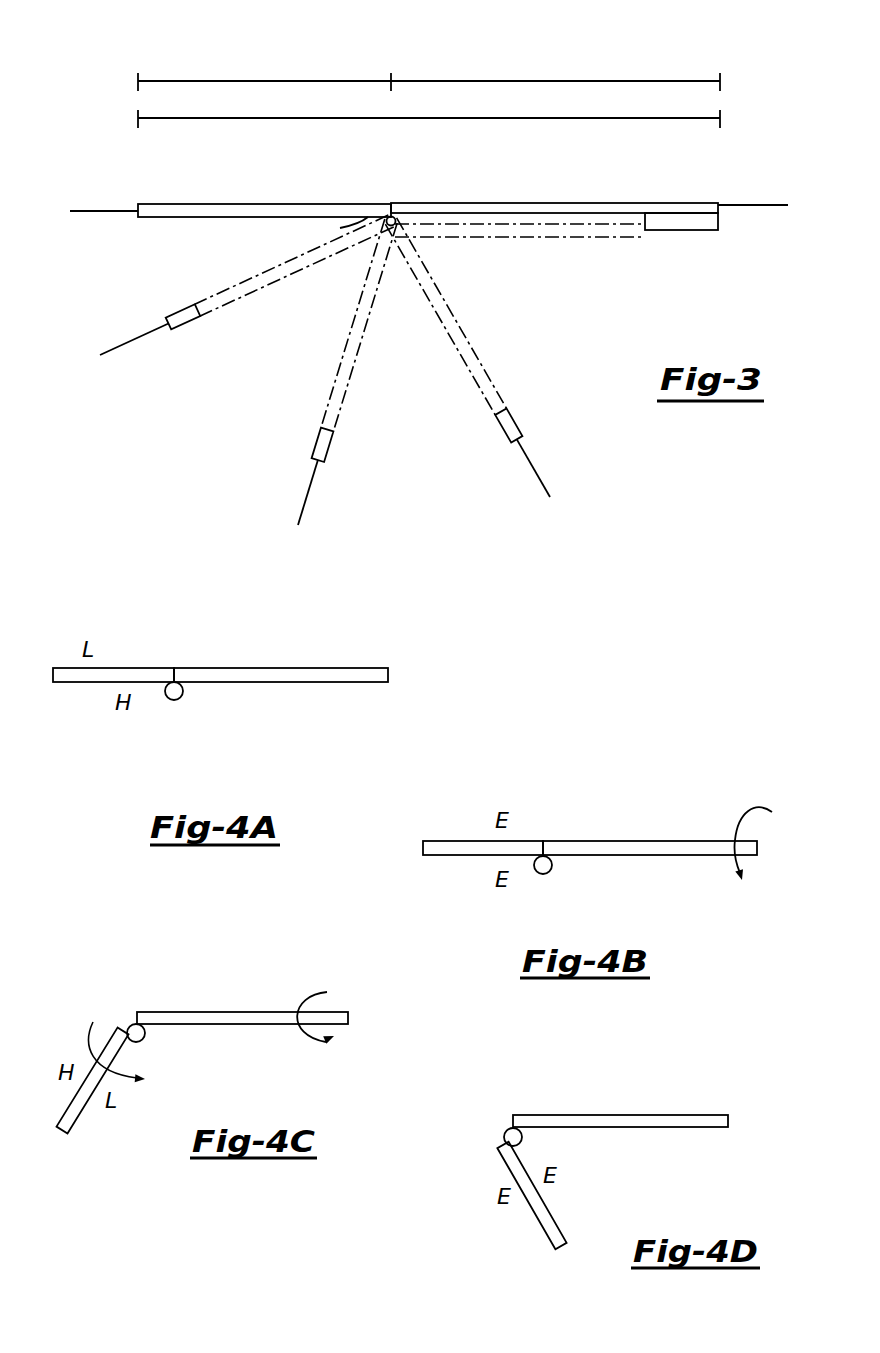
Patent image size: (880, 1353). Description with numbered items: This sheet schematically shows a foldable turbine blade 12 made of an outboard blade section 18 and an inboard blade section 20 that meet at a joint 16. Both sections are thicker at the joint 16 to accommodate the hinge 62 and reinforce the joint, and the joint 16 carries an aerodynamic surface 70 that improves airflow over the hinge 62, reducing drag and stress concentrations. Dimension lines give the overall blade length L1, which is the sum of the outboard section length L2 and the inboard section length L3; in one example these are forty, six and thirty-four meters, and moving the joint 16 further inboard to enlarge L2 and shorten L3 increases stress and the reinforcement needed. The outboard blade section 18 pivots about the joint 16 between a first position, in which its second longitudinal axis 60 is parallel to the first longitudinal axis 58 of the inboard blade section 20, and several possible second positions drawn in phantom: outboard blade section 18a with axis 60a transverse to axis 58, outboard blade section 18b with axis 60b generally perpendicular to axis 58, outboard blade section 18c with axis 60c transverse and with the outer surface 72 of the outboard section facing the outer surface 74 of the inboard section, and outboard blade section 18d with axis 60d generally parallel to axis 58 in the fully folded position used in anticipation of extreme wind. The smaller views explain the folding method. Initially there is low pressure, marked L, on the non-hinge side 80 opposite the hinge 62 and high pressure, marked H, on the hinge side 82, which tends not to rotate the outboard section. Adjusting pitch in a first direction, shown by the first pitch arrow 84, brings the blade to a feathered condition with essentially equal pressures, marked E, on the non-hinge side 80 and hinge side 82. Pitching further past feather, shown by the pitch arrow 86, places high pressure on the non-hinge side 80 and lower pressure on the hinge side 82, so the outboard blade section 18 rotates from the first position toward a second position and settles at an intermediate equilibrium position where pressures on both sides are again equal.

In FIG. 3, the turbine blade 12 is at (332, 140).
In FIG. 4A, the turbine blade 12 is at (132, 643).
In FIG. 3, the joint 16 is at (390, 196).
In FIG. 3, the outboard blade section 18 is at (284, 203).
In FIG. 4A, the outboard blade section 18 is at (65, 682).
In FIG. 4B, the outboard blade section 18 is at (437, 856).
In FIG. 4C, the outboard blade section 18 is at (77, 1118).
In FIG. 4D, the outboard blade section 18 is at (528, 1214).
In FIG. 3, the inboard blade section 20 is at (656, 203).
In FIG. 4A, the inboard blade section 20 is at (372, 682).
In FIG. 4B, the inboard blade section 20 is at (680, 851).
In FIG. 4C, the inboard blade section 20 is at (270, 1025).
In FIG. 4D, the inboard blade section 20 is at (700, 1127).
In FIG. 3, the first longitudinal axis 58 is at (775, 205).
In FIG. 3, the second longitudinal axis 60 is at (80, 211).
In FIG. 3, the second longitudinal axis 60a is at (113, 353).
In FIG. 3, the second longitudinal axis 60b is at (300, 517).
In FIG. 3, the second longitudinal axis 60c is at (543, 483).
In FIG. 3, the second longitudinal axis 60d is at (700, 232).
In FIG. 3, the outboard blade section 18a is at (190, 318).
In FIG. 3, the outboard blade section 18b is at (340, 393).
In FIG. 3, the outboard blade section 18c is at (485, 375).
In FIG. 3, the outboard blade section 18d is at (580, 240).
In FIG. 3, the aerodynamic surface 70 is at (360, 224).
In FIG. 3, the outer surface 72 is at (170, 226).
In FIG. 3, the outer surface 74 is at (724, 220).
In FIG. 4A, the hinge 62 is at (175, 710).
In FIG. 4A, the non-hinge side 80 is at (158, 668).
In FIG. 4B, the non-hinge side 80 is at (526, 841).
In FIG. 4D, the non-hinge side 80 is at (497, 1168).
In FIG. 4A, the hinge side 82 is at (245, 682).
In FIG. 4B, the hinge side 82 is at (460, 856).
In FIG. 4D, the hinge side 82 is at (560, 1221).
In FIG. 4B, the first pitch arrow 84 is at (738, 818).
In FIG. 4C, the pitch arrow 86 is at (325, 990).
In FIG. 3, the length of the turbine blade L1 is at (205, 118).
In FIG. 3, the length of the outboard blade section L2 is at (250, 81).
In FIG. 3, the length of the inboard blade section L3 is at (577, 81).